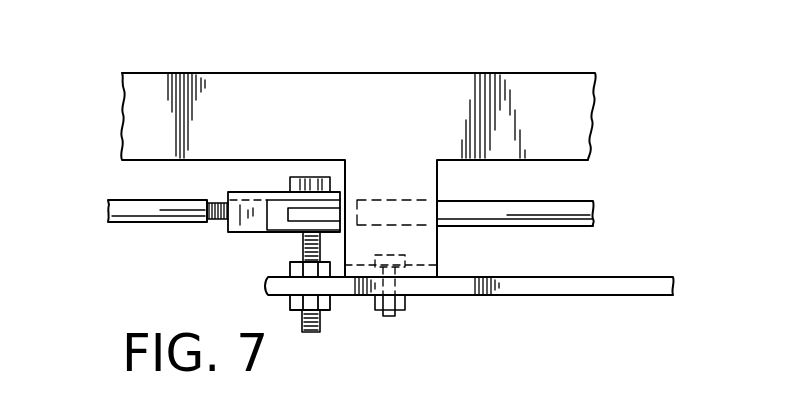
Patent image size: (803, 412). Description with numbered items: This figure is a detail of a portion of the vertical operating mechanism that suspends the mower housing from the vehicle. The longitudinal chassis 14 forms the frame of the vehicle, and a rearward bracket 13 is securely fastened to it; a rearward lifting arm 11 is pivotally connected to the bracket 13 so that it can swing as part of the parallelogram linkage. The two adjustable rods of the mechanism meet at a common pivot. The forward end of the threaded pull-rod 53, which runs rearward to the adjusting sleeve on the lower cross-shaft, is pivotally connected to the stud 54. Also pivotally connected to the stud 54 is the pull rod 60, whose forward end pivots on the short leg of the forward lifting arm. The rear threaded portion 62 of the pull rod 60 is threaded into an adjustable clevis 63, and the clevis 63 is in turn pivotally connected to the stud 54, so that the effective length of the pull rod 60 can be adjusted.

The rearward lifting arm 11 is at (602, 283).
The rearward bracket 13 is at (385, 167).
The longitudinal chassis 14 is at (329, 131).
The threaded pull-rod 53 is at (547, 207).
The stud 54 is at (300, 237).
The pull rod 60 is at (163, 203).
The rear threaded portion 62 is at (217, 223).
The adjustable clevis 63 is at (240, 192).